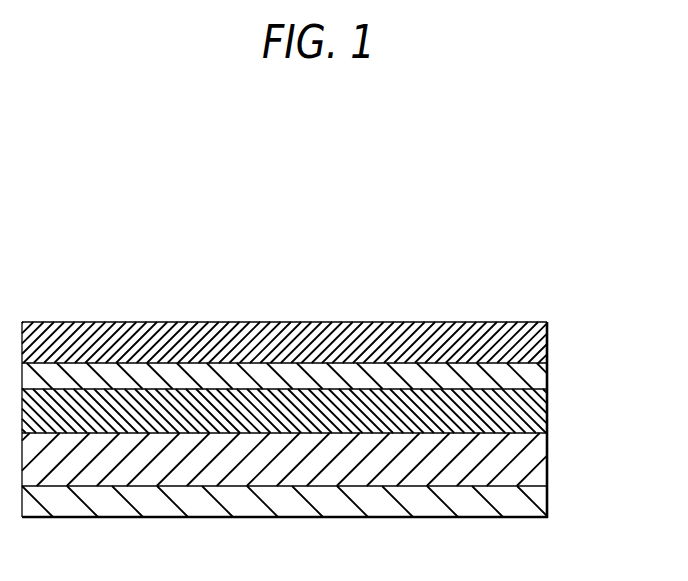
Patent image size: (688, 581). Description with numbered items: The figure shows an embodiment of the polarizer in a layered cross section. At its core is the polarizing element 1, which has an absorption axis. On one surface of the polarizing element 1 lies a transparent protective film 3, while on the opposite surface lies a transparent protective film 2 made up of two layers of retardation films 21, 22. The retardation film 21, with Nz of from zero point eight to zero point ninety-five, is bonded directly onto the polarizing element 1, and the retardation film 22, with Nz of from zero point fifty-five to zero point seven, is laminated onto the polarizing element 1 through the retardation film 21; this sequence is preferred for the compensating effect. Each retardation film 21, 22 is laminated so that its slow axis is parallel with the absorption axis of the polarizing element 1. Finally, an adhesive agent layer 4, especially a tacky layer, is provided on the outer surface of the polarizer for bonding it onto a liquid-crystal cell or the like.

The polarizing element 1 is at (548, 373).
The transparent protective film 2 is at (342, 437).
The retardation film 21 is at (548, 408).
The retardation film 22 is at (323, 459).
The transparent protective film 3 is at (548, 339).
The adhesive agent layer 4 is at (548, 502).